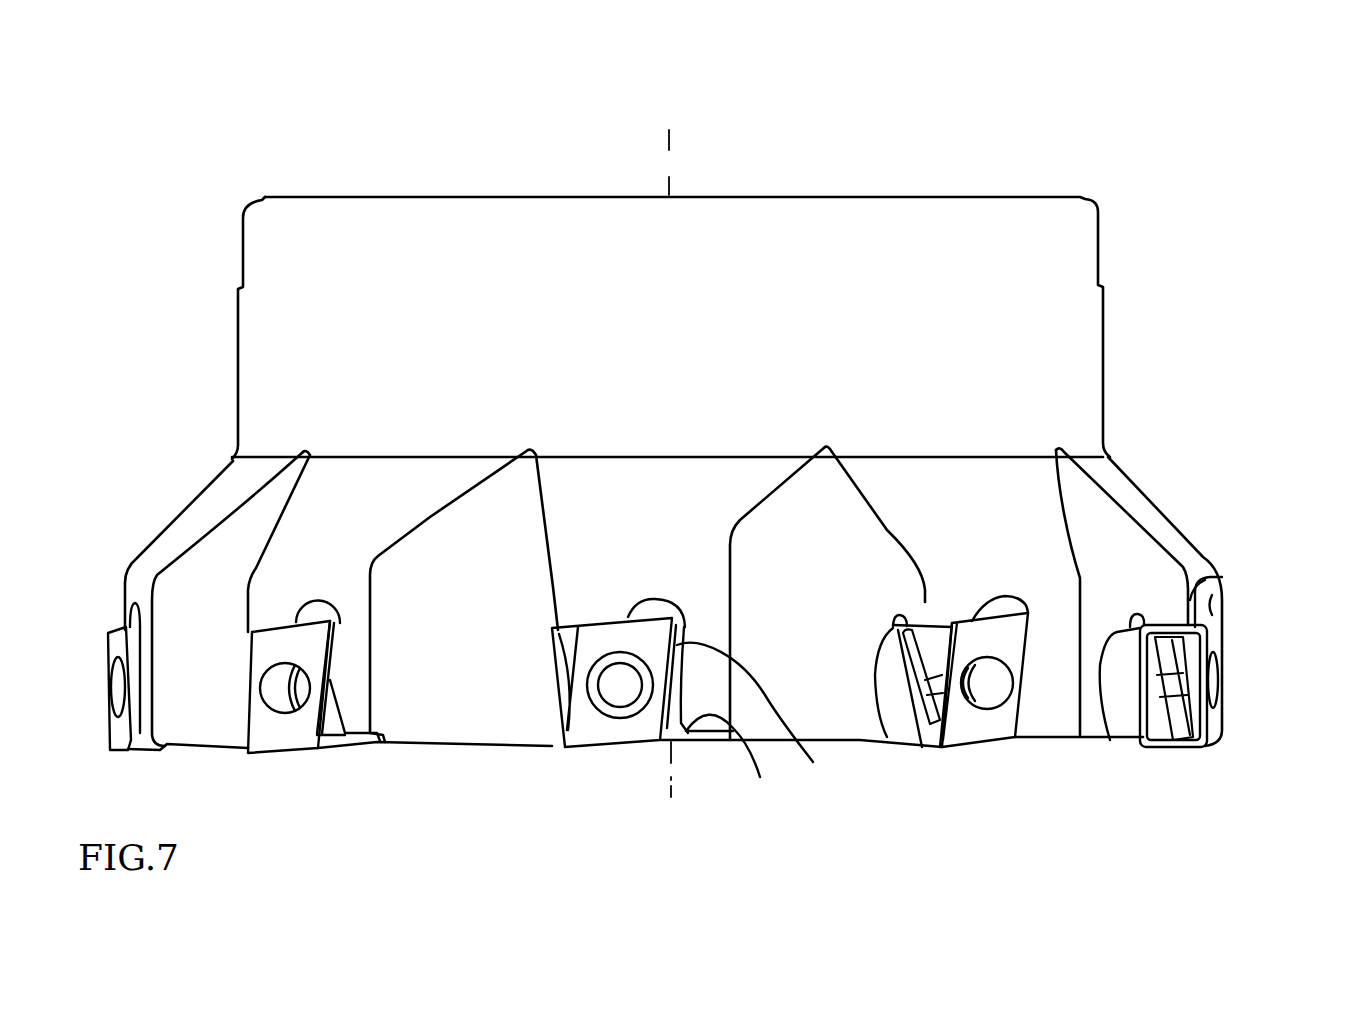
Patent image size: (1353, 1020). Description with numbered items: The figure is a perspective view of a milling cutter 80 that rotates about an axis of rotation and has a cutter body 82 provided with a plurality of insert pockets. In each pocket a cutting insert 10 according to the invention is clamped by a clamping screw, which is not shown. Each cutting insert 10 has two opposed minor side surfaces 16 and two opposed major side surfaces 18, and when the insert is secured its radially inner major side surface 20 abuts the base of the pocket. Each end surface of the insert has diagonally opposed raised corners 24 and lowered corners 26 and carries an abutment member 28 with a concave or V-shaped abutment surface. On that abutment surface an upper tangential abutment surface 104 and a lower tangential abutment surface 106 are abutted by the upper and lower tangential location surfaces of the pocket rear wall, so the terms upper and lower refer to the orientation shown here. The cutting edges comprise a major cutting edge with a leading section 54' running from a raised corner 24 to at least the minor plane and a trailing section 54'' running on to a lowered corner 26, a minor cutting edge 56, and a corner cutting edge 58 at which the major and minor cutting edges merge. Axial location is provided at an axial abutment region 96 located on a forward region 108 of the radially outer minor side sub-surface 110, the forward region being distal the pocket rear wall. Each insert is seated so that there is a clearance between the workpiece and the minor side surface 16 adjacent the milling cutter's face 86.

The milling cutter 80 is at (700, 468).
The cutter body 82 is at (673, 502).
The face 86 is at (703, 790).
The cutting insert 10 is at (971, 668).
The minor side surface 16 is at (607, 750).
The major side surface 18 is at (993, 728).
The radially inner major side surface 20 is at (1147, 720).
The raised corner 24 is at (939, 750).
The lowered corner 26 is at (957, 613).
The abutment member 28 is at (937, 702).
The leading section 54' is at (711, 701).
The trailing section 54'' is at (1255, 642).
The minor cutting edge 56 is at (1182, 757).
The corner cutting edge 58 is at (565, 745).
The axial abutment region 96 is at (598, 627).
The upper tangential abutment surface 104 is at (773, 710).
The lower tangential abutment surface 106 is at (750, 742).
The forward region 108 is at (585, 620).
The radially outer minor side sub-surface 110 is at (1208, 563).